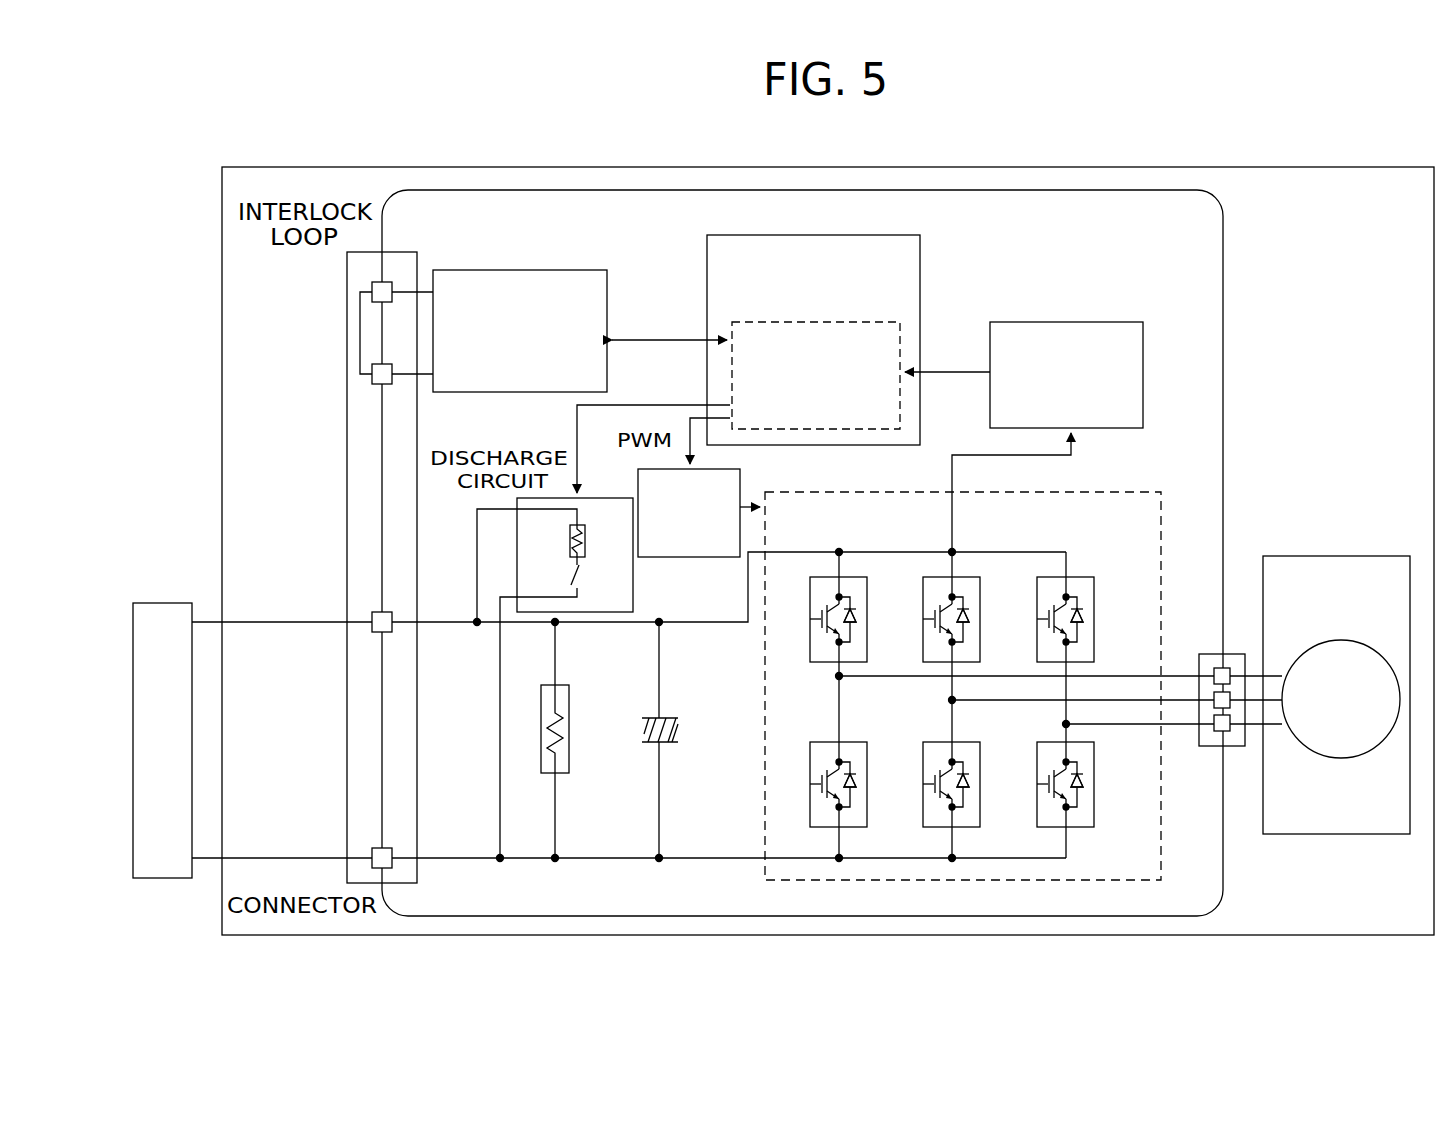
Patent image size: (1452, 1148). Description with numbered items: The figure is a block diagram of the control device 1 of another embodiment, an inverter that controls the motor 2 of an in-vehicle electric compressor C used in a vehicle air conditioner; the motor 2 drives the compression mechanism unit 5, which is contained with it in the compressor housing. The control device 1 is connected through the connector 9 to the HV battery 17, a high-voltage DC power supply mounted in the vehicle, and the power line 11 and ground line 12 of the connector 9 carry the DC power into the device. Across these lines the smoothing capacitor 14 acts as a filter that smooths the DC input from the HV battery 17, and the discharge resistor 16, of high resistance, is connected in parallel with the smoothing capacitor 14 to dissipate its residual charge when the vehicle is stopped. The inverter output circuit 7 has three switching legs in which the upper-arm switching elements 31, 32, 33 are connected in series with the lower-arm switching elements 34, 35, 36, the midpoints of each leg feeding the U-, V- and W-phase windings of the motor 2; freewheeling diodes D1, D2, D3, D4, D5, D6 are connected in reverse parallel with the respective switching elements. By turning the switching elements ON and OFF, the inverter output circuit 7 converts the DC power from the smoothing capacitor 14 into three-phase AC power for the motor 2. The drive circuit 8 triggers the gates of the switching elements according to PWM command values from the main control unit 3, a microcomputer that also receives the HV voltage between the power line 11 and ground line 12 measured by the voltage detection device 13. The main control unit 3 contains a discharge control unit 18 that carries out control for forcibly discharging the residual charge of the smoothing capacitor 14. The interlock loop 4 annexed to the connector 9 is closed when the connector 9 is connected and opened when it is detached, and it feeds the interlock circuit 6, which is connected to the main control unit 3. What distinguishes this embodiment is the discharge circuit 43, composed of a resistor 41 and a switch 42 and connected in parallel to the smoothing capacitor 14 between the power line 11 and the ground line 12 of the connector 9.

The electric compressor C is at (1295, 167).
The control device 1 is at (1224, 283).
The motor 2 is at (1343, 641).
The main control unit 3 is at (921, 297).
The interlock loop 4 is at (360, 333).
The compression mechanism unit 5 is at (1350, 556).
The interlock circuit 6 is at (552, 270).
The inverter output circuit 7 is at (1165, 545).
The drive circuit 8 is at (743, 485).
The connector 9 is at (430, 527).
The power line 11 is at (434, 622).
The ground line 12 is at (444, 858).
The voltage detection device 13 is at (1104, 322).
The smoothing capacitor 14 is at (680, 718).
The discharge resistor 16 is at (560, 684).
The HV battery 17 is at (160, 602).
The discharge control unit 18 is at (761, 322).
The switching element 31 is at (810, 637).
The switching element 32 is at (923, 643).
The switching element 33 is at (1037, 643).
The switching element 34 is at (810, 802).
The switching element 35 is at (923, 811).
The switching element 36 is at (1037, 811).
The resistor 41 is at (568, 538).
The switch 42 is at (584, 578).
The discharge circuit 43 is at (590, 498).
The freewheeling diode D1 is at (867, 620).
The freewheeling diode D2 is at (980, 620).
The freewheeling diode D3 is at (1094, 620).
The freewheeling diode D4 is at (867, 786).
The freewheeling diode D5 is at (980, 786).
The freewheeling diode D6 is at (1094, 786).